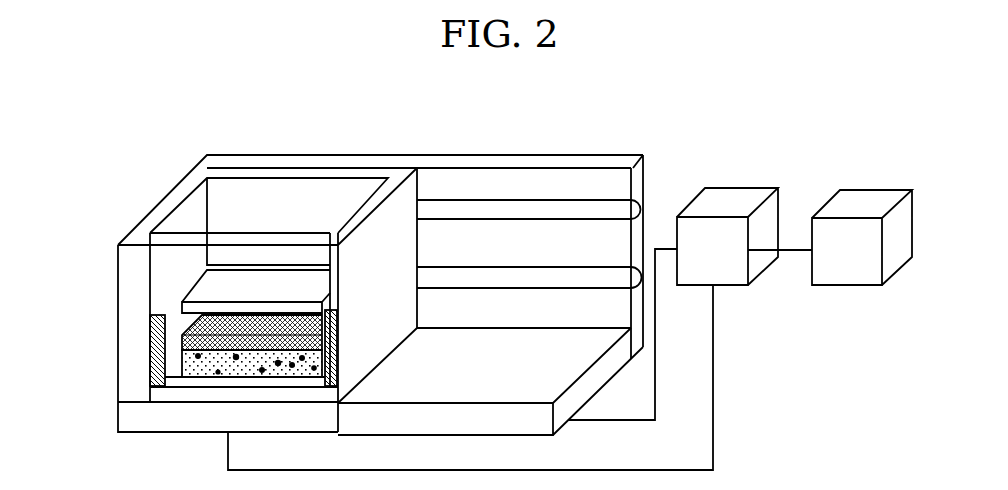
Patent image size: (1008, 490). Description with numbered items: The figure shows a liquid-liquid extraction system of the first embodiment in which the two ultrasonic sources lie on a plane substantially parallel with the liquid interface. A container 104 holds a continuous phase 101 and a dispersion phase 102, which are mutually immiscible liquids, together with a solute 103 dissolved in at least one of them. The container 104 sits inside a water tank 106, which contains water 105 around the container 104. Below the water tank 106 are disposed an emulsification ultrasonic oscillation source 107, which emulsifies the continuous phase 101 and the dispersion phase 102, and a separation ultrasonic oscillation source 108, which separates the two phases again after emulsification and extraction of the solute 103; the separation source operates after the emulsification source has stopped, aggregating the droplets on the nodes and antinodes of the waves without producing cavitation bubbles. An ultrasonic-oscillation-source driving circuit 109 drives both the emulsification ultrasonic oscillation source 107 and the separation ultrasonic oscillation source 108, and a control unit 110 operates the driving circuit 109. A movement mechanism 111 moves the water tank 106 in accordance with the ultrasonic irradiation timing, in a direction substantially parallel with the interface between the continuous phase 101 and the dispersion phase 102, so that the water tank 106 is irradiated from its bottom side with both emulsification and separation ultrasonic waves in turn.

The continuous phase 101 is at (182, 366).
The dispersion phase 102 is at (182, 303).
The solute 103 is at (182, 350).
The container 104 is at (287, 265).
The water 105 is at (152, 368).
The water tank 106 is at (305, 168).
The emulsification ultrasonic oscillation source 107 is at (117, 420).
The separation ultrasonic oscillation source 108 is at (453, 435).
The ultrasonic-oscillation-source driving circuit 109 is at (738, 188).
The control unit 110 is at (870, 190).
The movement mechanism 111 is at (428, 157).